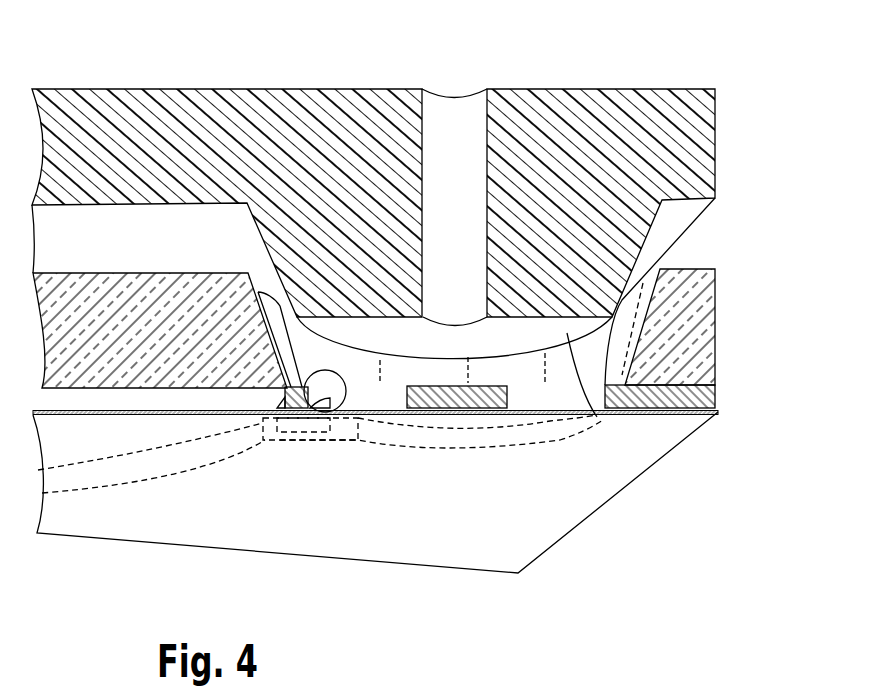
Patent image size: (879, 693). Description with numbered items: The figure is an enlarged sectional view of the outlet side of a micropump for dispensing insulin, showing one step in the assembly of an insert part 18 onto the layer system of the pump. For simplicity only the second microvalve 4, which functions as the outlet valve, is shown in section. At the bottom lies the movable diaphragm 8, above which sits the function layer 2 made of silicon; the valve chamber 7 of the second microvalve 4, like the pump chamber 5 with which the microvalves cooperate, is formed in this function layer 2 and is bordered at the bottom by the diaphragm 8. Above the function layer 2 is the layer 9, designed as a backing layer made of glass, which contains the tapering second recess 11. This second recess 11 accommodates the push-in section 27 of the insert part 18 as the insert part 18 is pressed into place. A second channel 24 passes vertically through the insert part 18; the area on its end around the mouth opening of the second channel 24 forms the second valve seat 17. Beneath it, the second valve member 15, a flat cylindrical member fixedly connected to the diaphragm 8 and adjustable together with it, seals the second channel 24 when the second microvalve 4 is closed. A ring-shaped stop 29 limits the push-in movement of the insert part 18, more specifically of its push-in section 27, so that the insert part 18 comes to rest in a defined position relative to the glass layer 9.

The function layer 2 is at (690, 397).
The second microvalve 4 is at (503, 467).
The pump chamber 5 is at (153, 468).
The valve chamber 7 is at (402, 437).
The diaphragm 8 is at (553, 413).
The layer 9 is at (692, 315).
The second recess 11 is at (638, 290).
The second valve member 15 is at (447, 402).
The second valve seat 17 is at (597, 417).
The insert part 18 is at (650, 136).
The second channel 24 is at (448, 135).
The push-in section 27 is at (352, 267).
The ring-shaped stop 29 is at (617, 373).